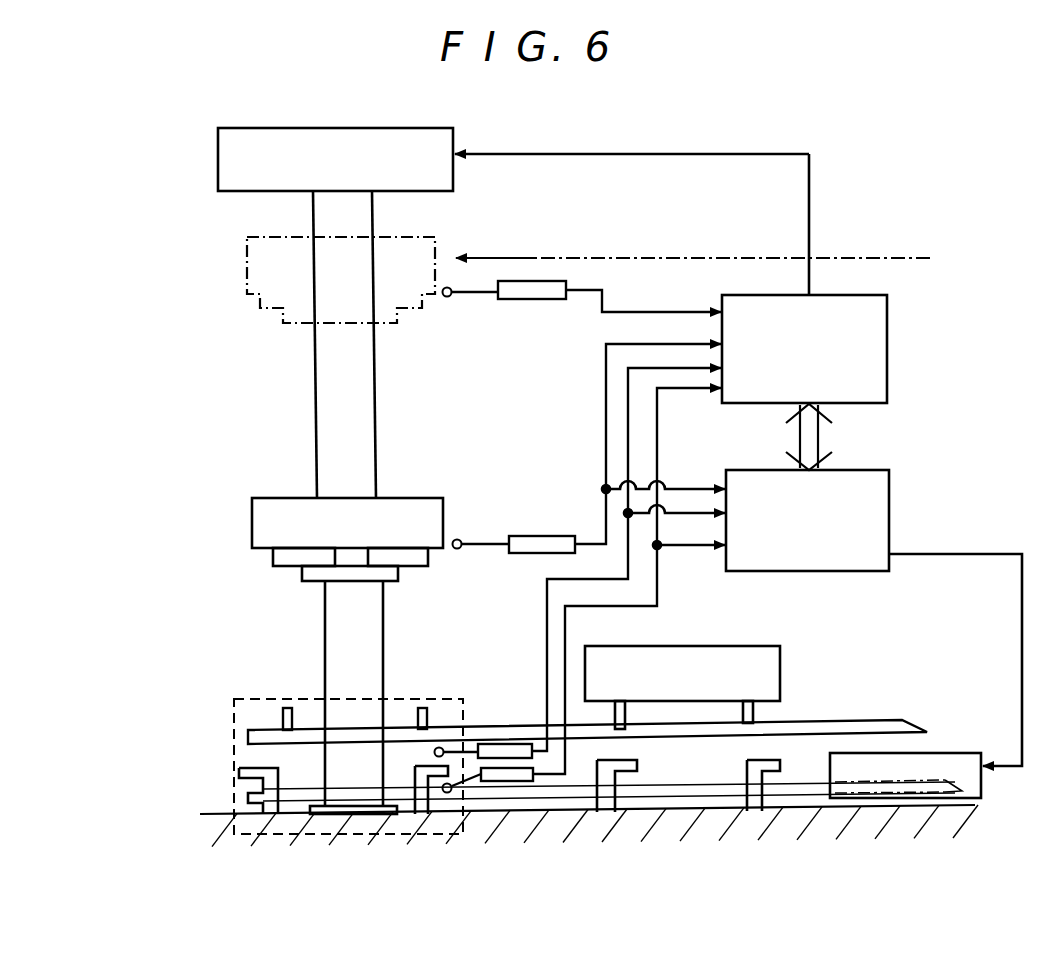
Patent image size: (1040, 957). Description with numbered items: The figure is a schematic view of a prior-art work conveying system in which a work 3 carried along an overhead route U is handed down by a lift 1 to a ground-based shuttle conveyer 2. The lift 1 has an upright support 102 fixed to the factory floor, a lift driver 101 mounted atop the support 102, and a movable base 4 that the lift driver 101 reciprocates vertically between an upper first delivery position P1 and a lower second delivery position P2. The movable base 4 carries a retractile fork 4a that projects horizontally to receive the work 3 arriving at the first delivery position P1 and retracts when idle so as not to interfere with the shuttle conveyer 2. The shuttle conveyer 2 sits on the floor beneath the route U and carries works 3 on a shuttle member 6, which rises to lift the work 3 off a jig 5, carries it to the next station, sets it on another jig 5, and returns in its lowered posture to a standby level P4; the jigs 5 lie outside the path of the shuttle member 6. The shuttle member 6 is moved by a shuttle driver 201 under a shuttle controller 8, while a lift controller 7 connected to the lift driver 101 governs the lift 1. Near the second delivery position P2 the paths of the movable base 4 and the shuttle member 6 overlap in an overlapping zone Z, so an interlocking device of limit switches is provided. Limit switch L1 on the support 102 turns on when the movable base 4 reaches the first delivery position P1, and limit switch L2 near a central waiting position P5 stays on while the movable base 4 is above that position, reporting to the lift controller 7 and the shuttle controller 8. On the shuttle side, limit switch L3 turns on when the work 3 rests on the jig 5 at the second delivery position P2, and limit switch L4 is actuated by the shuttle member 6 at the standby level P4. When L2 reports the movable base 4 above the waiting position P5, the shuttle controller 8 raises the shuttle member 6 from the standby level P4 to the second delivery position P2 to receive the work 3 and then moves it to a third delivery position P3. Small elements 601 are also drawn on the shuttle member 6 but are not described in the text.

The lift 1 is at (153, 210).
The shuttle conveyer 2 is at (892, 700).
The work 3 is at (446, 510).
The movable base 4 is at (434, 552).
The retractile fork 4a is at (290, 557).
The jig 5 is at (240, 770).
The shuttle member 6 is at (818, 724).
The lift controller 7 is at (887, 355).
The shuttle controller 8 is at (889, 525).
The lift driver 101 is at (455, 187).
The support 102 is at (312, 396).
The shuttle driver 201 is at (950, 752).
The locating pins 601 is at (280, 706).
The limit switch L1 is at (532, 298).
The limit switch L2 is at (525, 552).
The limit switch L3 is at (502, 742).
The limit switch L4 is at (505, 782).
The route U is at (604, 256).
The overlapping zone Z is at (240, 698).
The first delivery position P1 is at (200, 294).
The second delivery position P2 is at (203, 768).
The third delivery position P3 is at (686, 755).
The standby level P4 is at (233, 803).
The waiting position P5 is at (230, 568).